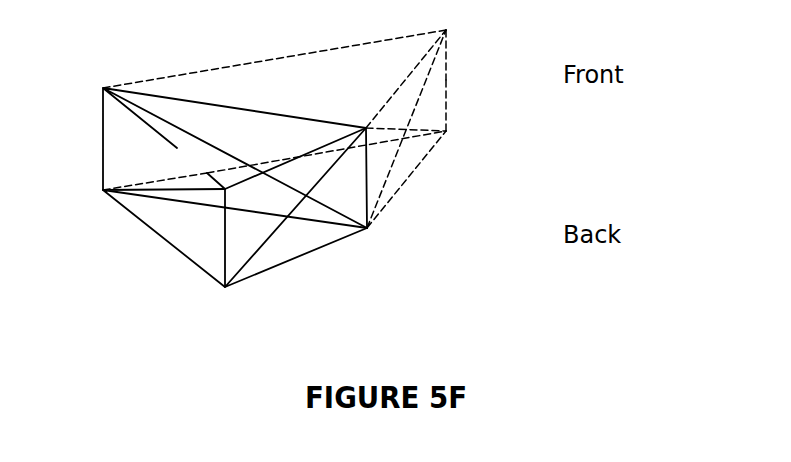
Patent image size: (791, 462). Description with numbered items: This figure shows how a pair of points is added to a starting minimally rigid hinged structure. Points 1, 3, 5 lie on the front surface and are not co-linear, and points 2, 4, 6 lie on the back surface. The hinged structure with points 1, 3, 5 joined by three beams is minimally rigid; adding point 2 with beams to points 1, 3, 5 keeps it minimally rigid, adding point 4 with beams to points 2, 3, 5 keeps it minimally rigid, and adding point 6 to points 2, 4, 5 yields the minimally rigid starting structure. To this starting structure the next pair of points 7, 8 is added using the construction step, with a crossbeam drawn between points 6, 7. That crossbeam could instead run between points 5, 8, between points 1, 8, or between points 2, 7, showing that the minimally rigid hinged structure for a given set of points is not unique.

The point 1 is at (242, 129).
The point 2 is at (212, 230).
The point 3 is at (313, 160).
The point 4 is at (284, 223).
The point 5 is at (335, 129).
The point 6 is at (406, 137).
The point 7 is at (469, 49).
The point 8 is at (469, 109).